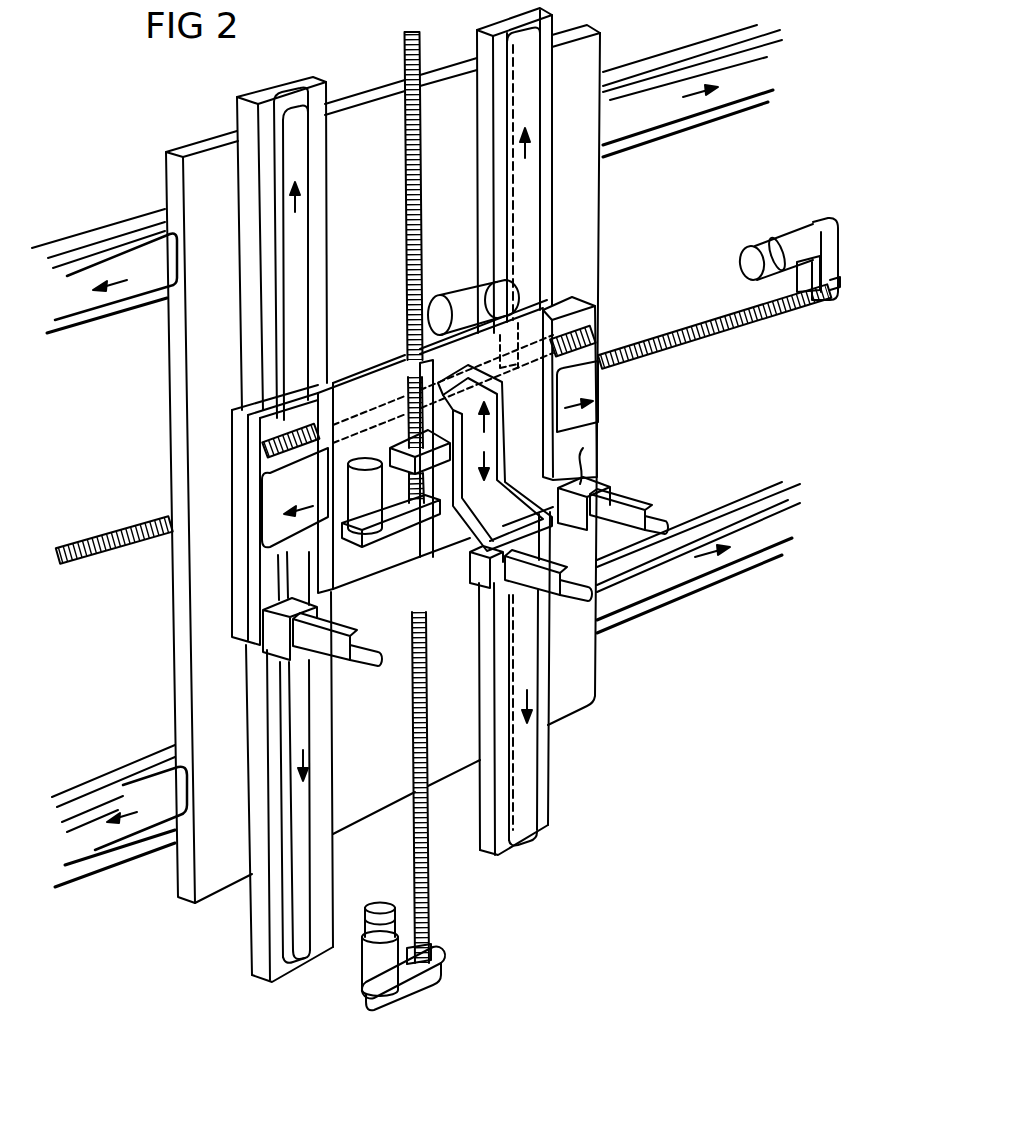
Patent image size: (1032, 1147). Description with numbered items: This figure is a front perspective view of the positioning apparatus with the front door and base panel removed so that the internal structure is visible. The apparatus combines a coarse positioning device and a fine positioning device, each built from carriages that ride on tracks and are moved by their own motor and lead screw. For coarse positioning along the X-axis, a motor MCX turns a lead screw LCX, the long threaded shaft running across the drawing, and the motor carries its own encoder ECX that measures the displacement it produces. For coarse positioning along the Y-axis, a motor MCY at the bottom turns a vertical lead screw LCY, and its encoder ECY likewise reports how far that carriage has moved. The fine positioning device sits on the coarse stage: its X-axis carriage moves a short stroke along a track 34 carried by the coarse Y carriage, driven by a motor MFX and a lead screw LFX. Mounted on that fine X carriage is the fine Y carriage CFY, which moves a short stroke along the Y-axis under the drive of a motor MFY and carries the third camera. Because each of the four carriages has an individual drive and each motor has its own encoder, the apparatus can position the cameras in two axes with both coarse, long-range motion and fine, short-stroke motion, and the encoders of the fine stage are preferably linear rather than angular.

The track 34 is at (267, 502).
The motor MFX is at (467, 300).
The lead screw LFX is at (566, 311).
The encoder ECX is at (752, 263).
The motor MCX is at (777, 245).
The lead screw LCX is at (697, 340).
The carriage CFY is at (481, 400).
The motor MFY is at (363, 508).
The encoder ECY is at (378, 912).
The lead screw LCY is at (430, 873).
The motor MCY is at (373, 962).